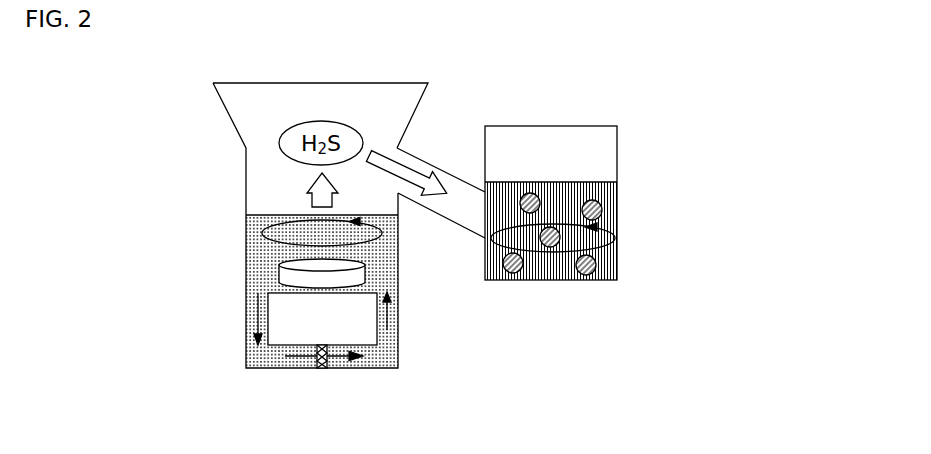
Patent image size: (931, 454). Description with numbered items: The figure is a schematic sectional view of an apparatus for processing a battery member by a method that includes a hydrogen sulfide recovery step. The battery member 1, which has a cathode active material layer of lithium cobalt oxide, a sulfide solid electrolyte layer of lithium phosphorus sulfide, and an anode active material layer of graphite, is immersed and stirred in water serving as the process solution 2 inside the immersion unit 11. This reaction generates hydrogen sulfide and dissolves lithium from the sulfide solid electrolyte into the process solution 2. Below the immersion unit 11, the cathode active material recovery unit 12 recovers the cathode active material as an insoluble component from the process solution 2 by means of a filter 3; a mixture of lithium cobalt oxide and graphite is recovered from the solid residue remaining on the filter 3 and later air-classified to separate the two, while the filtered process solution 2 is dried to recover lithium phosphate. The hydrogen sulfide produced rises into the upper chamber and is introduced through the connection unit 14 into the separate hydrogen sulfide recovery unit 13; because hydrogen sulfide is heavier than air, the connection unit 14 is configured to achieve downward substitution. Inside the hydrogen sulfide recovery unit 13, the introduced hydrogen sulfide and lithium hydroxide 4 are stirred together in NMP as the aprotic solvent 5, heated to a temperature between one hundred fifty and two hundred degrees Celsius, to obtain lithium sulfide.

The battery member 1 is at (360, 276).
The process solution 2 is at (392, 247).
The filter 3 is at (323, 369).
The lithium hydroxide 4 is at (600, 207).
The aprotic solvent 5 is at (603, 267).
The immersion unit 11 is at (236, 217).
The cathode active material recovery unit 12 is at (236, 293).
The hydrogen sulfide recovery unit 13 is at (485, 293).
The connection unit 14 is at (477, 72).